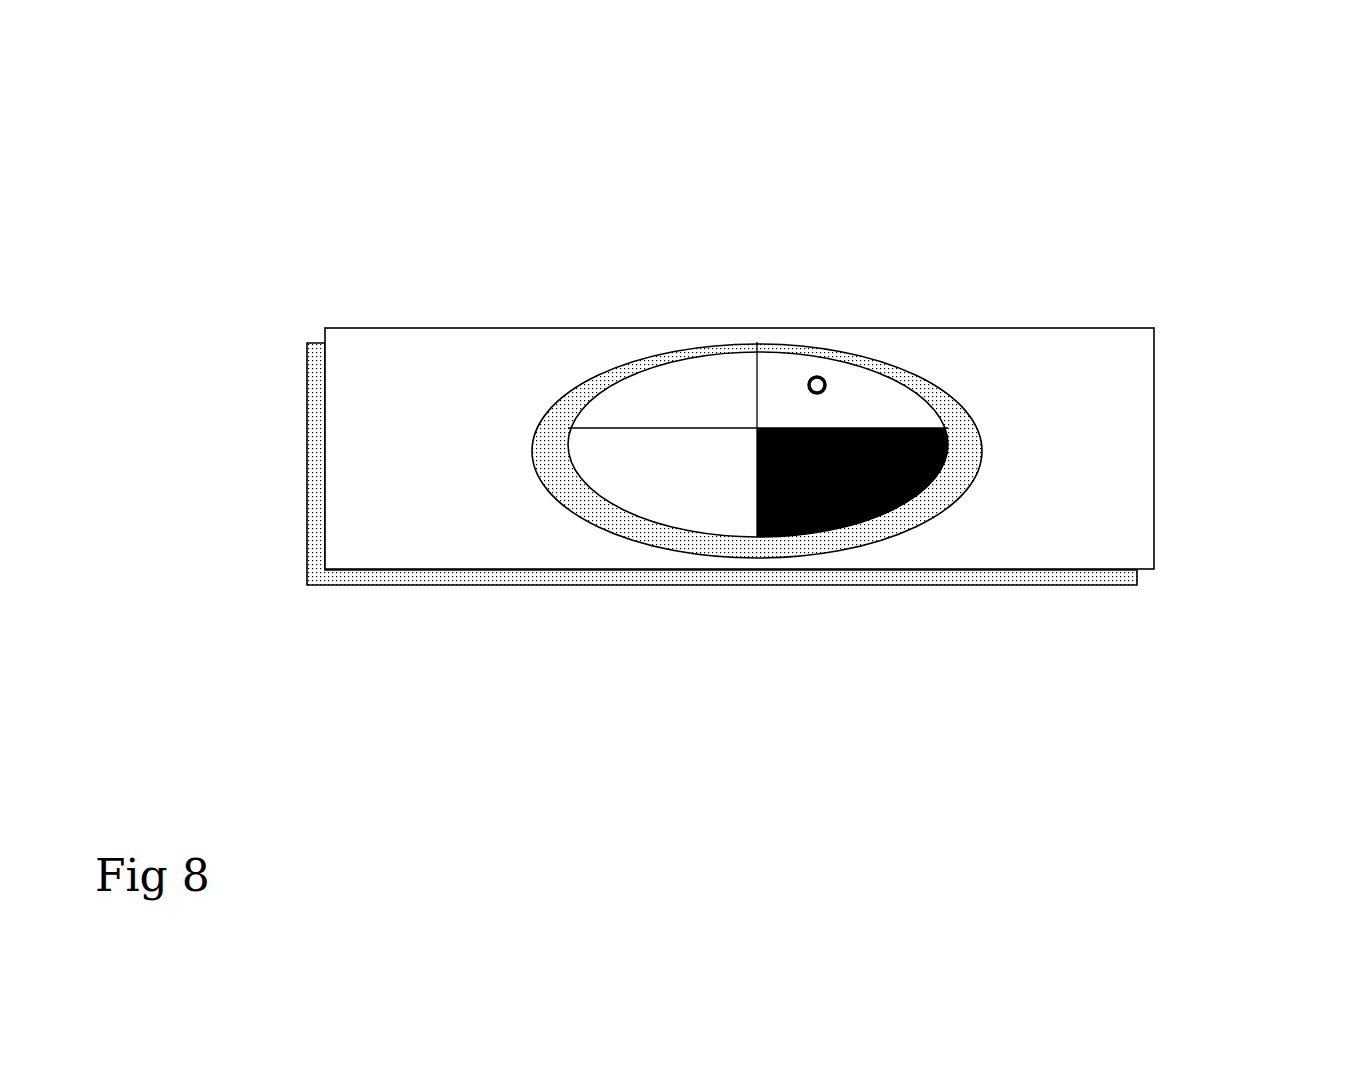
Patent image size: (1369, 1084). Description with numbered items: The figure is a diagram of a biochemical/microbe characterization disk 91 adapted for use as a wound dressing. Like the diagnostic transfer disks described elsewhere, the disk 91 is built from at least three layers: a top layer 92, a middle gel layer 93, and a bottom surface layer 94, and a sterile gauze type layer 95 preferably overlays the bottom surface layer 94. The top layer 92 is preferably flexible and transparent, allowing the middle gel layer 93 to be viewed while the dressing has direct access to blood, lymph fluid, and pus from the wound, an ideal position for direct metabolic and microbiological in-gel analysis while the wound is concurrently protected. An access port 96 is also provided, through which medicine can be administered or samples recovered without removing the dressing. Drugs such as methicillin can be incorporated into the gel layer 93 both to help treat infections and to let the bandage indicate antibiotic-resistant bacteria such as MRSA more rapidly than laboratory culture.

The biochemical/microbe characterization disk 91 is at (761, 406).
The top layer 92 is at (740, 343).
The middle gel layer 93 is at (568, 415).
The bottom surface layer 94 is at (395, 395).
The sterile gauze type layer 95 is at (323, 589).
The access port 96 is at (810, 373).